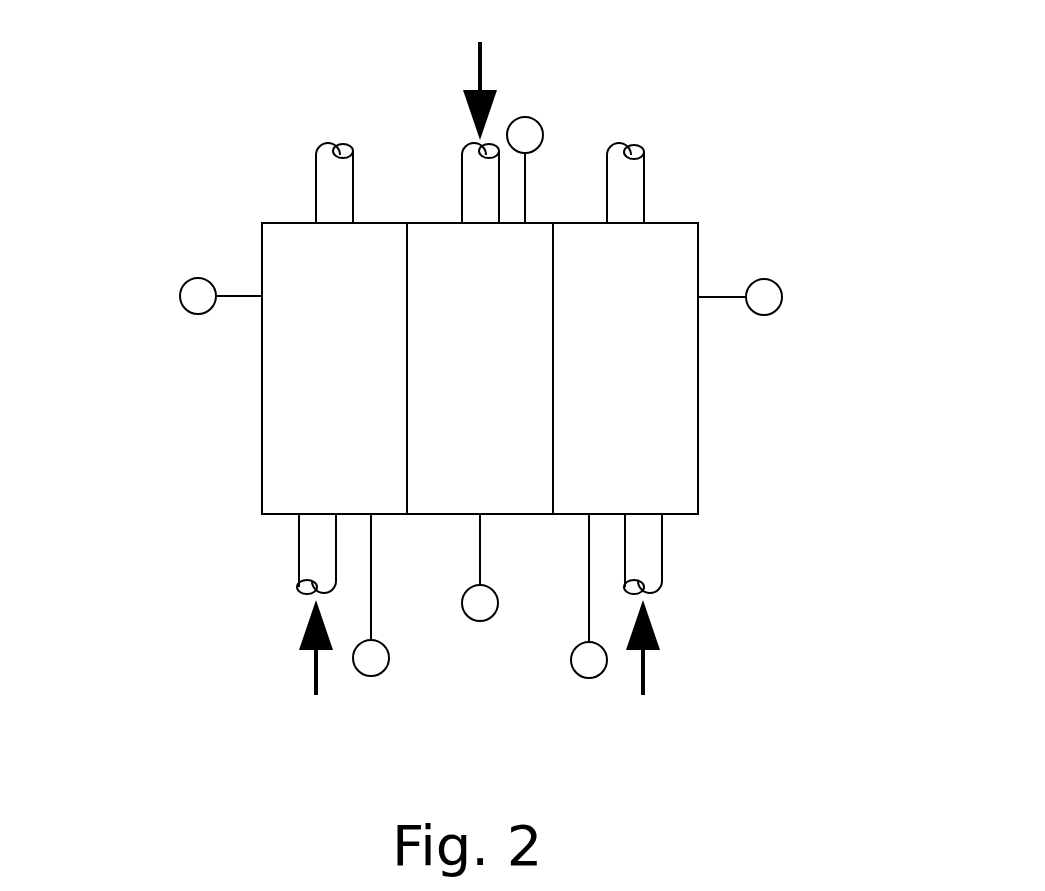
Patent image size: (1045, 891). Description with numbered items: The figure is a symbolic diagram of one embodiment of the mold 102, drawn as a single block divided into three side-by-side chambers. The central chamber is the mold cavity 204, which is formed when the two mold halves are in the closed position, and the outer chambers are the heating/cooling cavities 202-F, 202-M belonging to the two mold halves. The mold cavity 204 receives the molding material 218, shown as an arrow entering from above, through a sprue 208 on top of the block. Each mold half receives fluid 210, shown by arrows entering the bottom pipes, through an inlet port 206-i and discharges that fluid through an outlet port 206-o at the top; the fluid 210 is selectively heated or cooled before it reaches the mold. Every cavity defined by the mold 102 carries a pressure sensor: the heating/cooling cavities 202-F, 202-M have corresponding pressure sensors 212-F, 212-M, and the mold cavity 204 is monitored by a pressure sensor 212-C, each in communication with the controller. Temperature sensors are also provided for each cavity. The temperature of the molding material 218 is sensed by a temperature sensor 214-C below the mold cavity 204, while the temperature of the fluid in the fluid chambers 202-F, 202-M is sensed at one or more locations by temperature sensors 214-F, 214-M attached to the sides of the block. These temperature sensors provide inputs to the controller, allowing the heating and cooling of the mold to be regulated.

The mold 102 is at (364, 330).
The heating/cooling cavity 202-F is at (355, 352).
The heating/cooling cavity 202-M is at (667, 352).
The mold cavity 204 is at (495, 352).
The outlet port 206-o is at (316, 182).
The inlet port 206-i is at (299, 540).
The sprue 208 is at (462, 183).
The fluid 210 is at (316, 678).
The pressure sensor 212-C is at (525, 117).
The pressure sensor 212-F is at (371, 676).
The pressure sensor 212-M is at (589, 678).
The temperature sensor 214-F is at (180, 295).
The temperature sensor 214-M is at (782, 296).
The temperature sensor 214-C is at (480, 621).
The molding material 218 is at (480, 63).